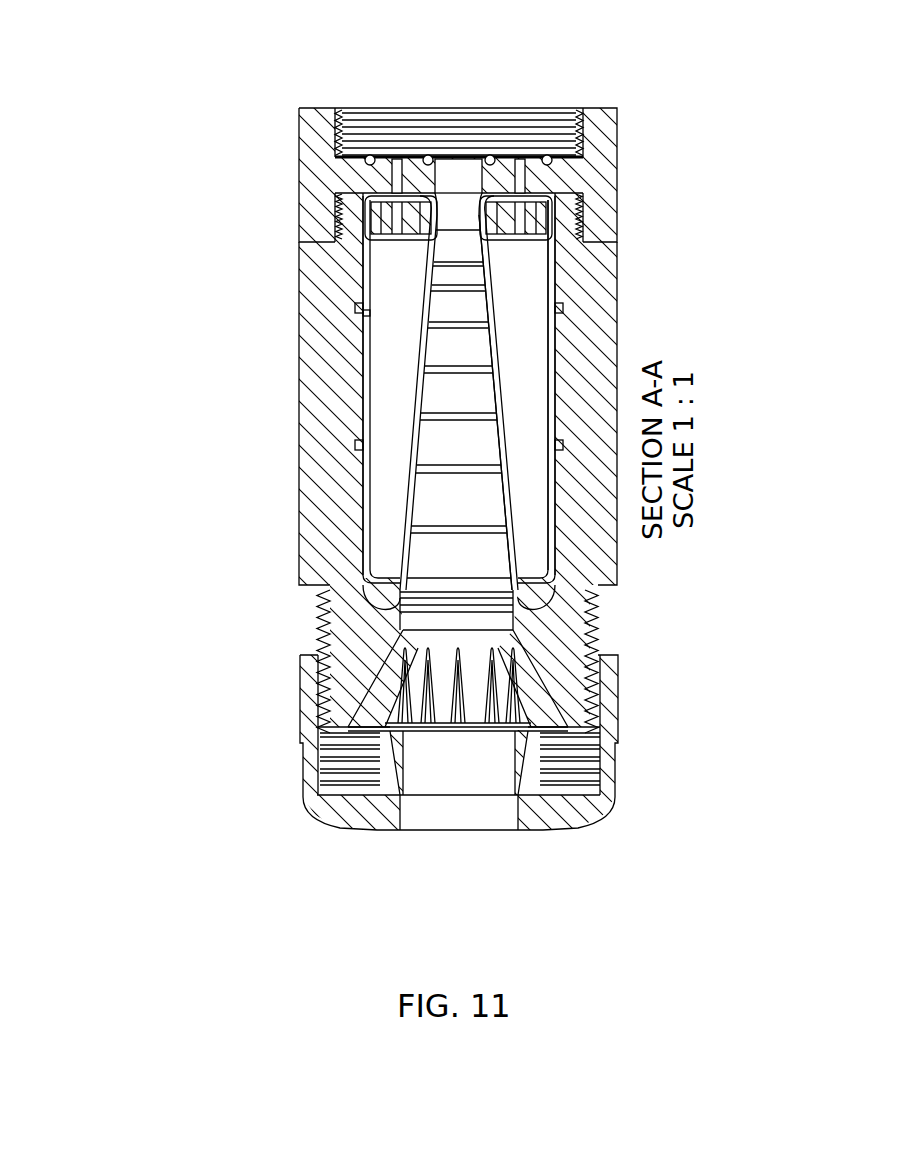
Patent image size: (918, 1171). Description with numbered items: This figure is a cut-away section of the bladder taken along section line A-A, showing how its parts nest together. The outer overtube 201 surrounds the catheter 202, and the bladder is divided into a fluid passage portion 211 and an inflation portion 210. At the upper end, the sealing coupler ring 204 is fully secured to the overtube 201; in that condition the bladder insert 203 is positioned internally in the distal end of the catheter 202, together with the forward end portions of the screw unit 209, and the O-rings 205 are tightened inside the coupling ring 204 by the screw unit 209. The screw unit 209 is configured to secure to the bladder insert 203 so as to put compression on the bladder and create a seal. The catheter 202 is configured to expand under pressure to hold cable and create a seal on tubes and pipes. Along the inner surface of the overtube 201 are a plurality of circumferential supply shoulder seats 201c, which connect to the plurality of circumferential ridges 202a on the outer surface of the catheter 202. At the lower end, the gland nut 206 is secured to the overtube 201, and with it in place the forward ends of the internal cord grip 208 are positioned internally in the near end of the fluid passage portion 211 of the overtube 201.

The overtube 201 is at (297, 482).
The circumferential supply shoulder seats 201c is at (357, 302).
The catheter 202 is at (553, 338).
The circumferential ridges 202a is at (362, 315).
The bladder insert 203 is at (372, 212).
The sealing coupler ring 204 is at (617, 172).
The O-rings 205 is at (548, 160).
The gland nut 206 is at (618, 725).
The internal cord grip 208 is at (427, 668).
The screw unit 209 is at (400, 168).
The inflation portion 210 is at (523, 296).
The fluid passage portion 211 is at (428, 403).